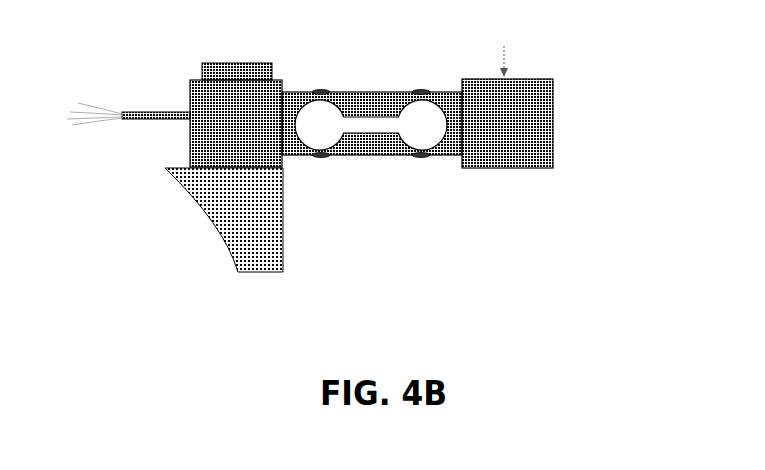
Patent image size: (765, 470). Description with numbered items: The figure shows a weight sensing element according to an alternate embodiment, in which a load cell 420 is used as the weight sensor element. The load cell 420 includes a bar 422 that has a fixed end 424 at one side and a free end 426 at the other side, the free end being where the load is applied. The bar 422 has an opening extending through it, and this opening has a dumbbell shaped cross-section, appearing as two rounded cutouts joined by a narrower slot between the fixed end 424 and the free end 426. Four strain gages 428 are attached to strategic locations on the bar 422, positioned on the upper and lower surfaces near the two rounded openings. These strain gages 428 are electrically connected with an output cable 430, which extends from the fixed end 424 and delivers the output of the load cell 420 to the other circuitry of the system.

The load cell 420 is at (371, 139).
The bar 422 is at (375, 156).
The fixed end 424 is at (192, 95).
The free end 426 is at (553, 114).
The strain gages 428 is at (320, 91).
The output cable 430 is at (160, 117).